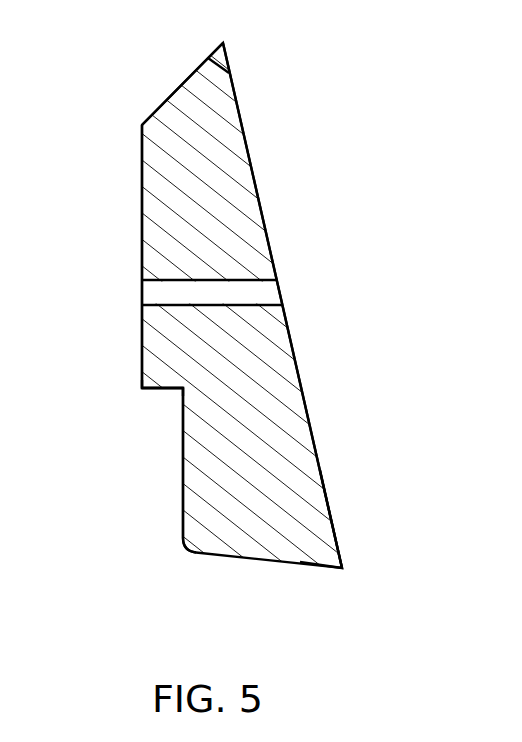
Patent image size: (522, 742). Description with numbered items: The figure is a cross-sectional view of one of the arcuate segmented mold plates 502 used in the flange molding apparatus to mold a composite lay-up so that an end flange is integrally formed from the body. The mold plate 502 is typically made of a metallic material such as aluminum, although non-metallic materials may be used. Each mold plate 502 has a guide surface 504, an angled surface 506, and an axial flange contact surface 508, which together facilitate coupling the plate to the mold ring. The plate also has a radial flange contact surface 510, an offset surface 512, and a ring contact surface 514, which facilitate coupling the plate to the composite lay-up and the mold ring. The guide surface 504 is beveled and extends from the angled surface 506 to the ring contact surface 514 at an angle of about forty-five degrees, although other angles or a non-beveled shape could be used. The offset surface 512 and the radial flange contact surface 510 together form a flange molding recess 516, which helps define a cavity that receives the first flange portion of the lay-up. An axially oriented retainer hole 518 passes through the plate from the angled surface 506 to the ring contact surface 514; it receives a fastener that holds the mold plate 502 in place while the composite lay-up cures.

The arcuate segmented mold plate 502 is at (427, 158).
The guide surface 504 is at (186, 73).
The angled surface 506 is at (237, 98).
The axial flange contact surface 508 is at (313, 570).
The radial flange contact surface 510 is at (183, 499).
The offset surface 512 is at (149, 389).
The ring contact surface 514 is at (141, 201).
The flange molding recess 516 is at (138, 458).
The retainer hole 518 is at (281, 292).